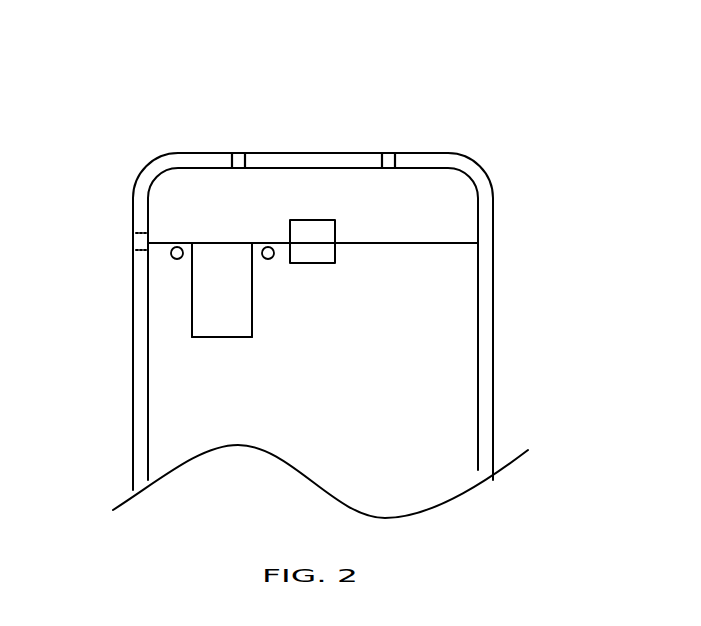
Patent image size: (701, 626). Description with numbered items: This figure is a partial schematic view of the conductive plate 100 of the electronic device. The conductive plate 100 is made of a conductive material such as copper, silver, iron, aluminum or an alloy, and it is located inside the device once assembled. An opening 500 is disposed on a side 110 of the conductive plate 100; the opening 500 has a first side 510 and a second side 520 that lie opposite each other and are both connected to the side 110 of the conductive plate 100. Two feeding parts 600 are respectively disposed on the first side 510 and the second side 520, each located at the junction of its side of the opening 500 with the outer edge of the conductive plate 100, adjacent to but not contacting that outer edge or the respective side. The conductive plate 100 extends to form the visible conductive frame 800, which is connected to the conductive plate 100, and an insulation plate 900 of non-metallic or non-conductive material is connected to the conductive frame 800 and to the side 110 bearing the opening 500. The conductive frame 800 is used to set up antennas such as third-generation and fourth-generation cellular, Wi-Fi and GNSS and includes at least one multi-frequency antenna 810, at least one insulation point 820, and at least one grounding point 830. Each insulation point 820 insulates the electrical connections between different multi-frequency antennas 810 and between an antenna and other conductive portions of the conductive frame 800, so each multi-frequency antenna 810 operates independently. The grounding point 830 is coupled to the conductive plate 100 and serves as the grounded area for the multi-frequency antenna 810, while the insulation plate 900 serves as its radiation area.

The conductive plate 100 is at (458, 404).
The side of the conductive plate 110 is at (407, 244).
The opening 500 is at (213, 321).
The first side 510 is at (190, 325).
The second side 520 is at (254, 325).
The feeding parts 600 is at (177, 259).
The conductive frame 800 is at (480, 100).
The multi-frequency antenna 810 is at (180, 160).
The insulation point 820 is at (239, 162).
The grounding point 830 is at (133, 243).
The insulation plate 900 is at (458, 202).